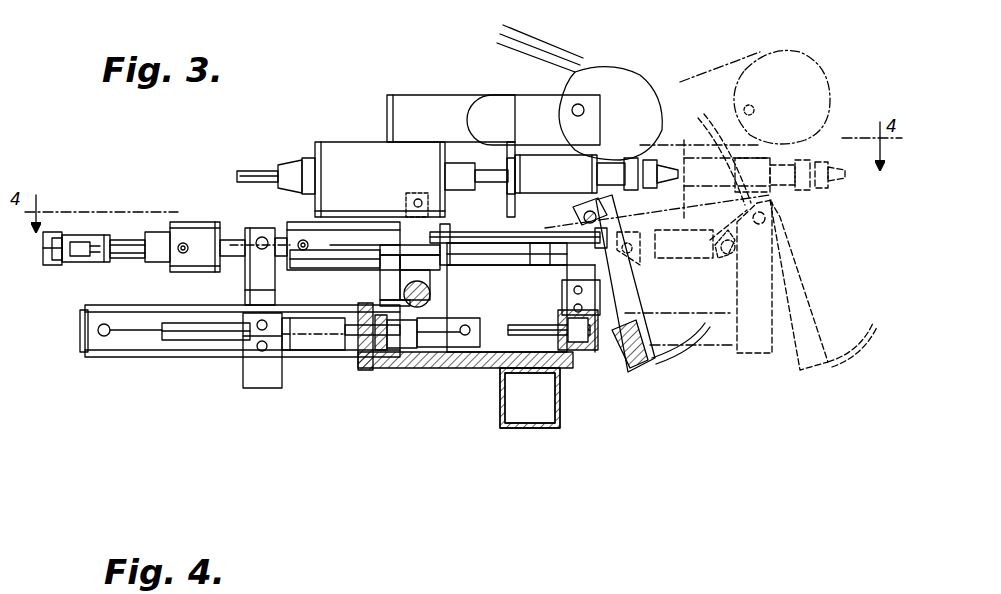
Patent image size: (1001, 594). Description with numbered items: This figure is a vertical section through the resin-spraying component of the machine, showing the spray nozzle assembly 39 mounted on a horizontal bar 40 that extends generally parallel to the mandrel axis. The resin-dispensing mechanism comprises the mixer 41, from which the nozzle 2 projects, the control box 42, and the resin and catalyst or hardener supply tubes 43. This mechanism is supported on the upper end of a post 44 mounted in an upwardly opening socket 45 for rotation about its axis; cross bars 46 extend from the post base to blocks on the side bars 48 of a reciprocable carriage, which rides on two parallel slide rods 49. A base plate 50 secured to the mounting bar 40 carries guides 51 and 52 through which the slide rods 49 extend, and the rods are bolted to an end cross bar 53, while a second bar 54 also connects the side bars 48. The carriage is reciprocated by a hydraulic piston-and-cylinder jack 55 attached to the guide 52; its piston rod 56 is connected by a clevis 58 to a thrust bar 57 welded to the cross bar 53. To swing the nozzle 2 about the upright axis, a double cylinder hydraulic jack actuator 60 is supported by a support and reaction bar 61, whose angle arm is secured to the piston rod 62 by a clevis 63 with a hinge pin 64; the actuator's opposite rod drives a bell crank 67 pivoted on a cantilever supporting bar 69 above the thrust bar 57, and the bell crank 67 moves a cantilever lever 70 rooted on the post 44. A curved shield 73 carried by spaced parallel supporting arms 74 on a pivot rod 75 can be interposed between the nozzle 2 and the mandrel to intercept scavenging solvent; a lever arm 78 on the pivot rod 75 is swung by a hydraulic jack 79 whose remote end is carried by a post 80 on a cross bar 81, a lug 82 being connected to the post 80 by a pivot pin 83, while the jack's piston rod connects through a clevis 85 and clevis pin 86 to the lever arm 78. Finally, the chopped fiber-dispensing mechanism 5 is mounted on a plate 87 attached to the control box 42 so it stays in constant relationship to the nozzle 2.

The nozzle 2 is at (668, 170).
The chopped fiber-dispensing mechanism 5 is at (655, 92).
The spray nozzle assembly 39 is at (396, 74).
The horizontal bar 40 is at (500, 404).
The mixer 41 is at (546, 188).
The control box 42 is at (348, 148).
The resin and catalyst or hardener supply tubes 43 is at (252, 175).
The post 44 is at (390, 270).
The socket 45 is at (382, 285).
The cross bars 46 is at (432, 294).
The side bars 48 is at (332, 346).
The slide rods 49 is at (215, 342).
The base plate 50 is at (434, 370).
The guide 51 is at (530, 398).
The guide 52 is at (365, 368).
The end cross bar 53 is at (586, 355).
The second bar 54 is at (384, 356).
The hydraulic piston-and-cylinder jack 55 is at (140, 350).
The piston rod 56 is at (416, 366).
The thrust bar 57 is at (495, 320).
The clevis 58 is at (456, 350).
The double cylinder hydraulic jack actuator 60 is at (185, 226).
The support and reaction bar 61 is at (350, 256).
The piston rod 62 is at (125, 240).
The clevis 63 is at (97, 262).
The hinge pin 64 is at (58, 265).
The bell crank 67 is at (603, 255).
The supporting bar 69 is at (537, 265).
The cantilever lever 70 is at (488, 232).
The shield 73 is at (713, 115).
The supporting arms 74 is at (632, 345).
The pivot rod 75 is at (612, 214).
The lever arm 78 is at (572, 212).
The hydraulic jack 79 is at (293, 222).
The post 80 is at (245, 295).
The cross bar 81 is at (266, 380).
The lug 82 is at (256, 232).
The pivot pin 83 is at (272, 258).
The clevis 85 is at (686, 256).
The clevis pin 86 is at (718, 256).
The plate 87 is at (430, 104).